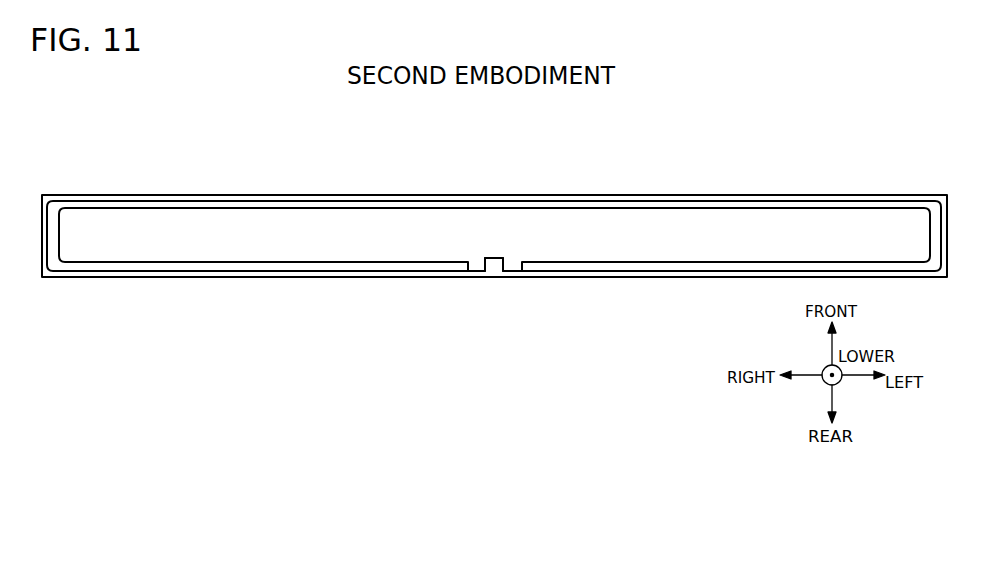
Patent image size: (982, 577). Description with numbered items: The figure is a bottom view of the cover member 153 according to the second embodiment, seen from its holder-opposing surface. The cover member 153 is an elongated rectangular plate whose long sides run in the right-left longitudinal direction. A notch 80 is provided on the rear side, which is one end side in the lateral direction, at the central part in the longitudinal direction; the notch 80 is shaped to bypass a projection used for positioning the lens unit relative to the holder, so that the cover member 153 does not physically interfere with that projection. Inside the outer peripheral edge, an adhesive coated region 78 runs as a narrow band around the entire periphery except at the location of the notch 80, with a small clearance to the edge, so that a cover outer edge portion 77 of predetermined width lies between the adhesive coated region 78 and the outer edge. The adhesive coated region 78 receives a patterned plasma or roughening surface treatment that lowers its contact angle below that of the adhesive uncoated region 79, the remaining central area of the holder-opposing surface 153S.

The cover member 153 is at (78, 138).
The cover outer edge portion 77 is at (177, 194).
The adhesive coated region 78 is at (254, 201).
The adhesive uncoated region 79 is at (608, 230).
The notch 80 is at (492, 265).
The interior space of frame 153S is at (496, 230).